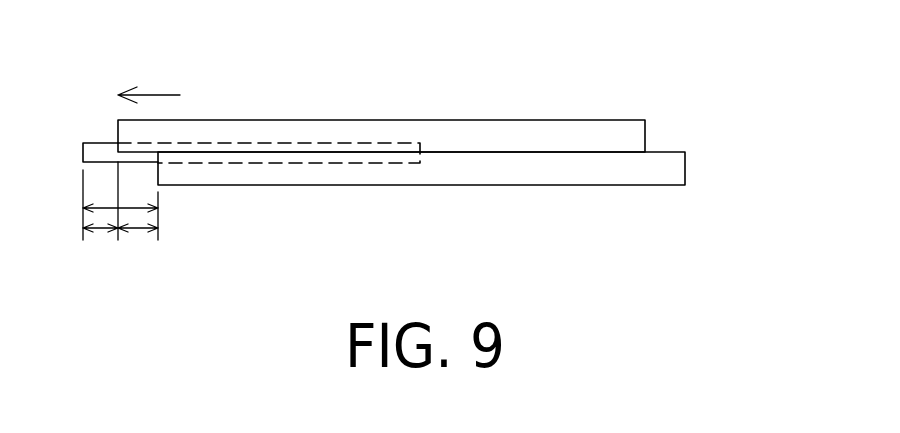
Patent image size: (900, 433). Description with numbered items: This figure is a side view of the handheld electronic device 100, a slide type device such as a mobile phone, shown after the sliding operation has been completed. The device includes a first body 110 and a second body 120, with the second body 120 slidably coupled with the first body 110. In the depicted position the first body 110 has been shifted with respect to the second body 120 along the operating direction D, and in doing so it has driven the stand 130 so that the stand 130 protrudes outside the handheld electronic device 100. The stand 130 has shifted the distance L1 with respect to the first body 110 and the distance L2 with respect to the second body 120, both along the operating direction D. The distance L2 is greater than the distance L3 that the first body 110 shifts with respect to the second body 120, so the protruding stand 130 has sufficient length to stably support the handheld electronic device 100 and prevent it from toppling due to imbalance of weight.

The handheld electronic device 100 is at (867, 277).
The first body 110 is at (633, 140).
The second body 120 is at (673, 163).
The stand 130 is at (112, 143).
The operating direction D is at (153, 95).
The distance L1 is at (100, 251).
The distance L2 is at (108, 208).
The distance L3 is at (143, 251).